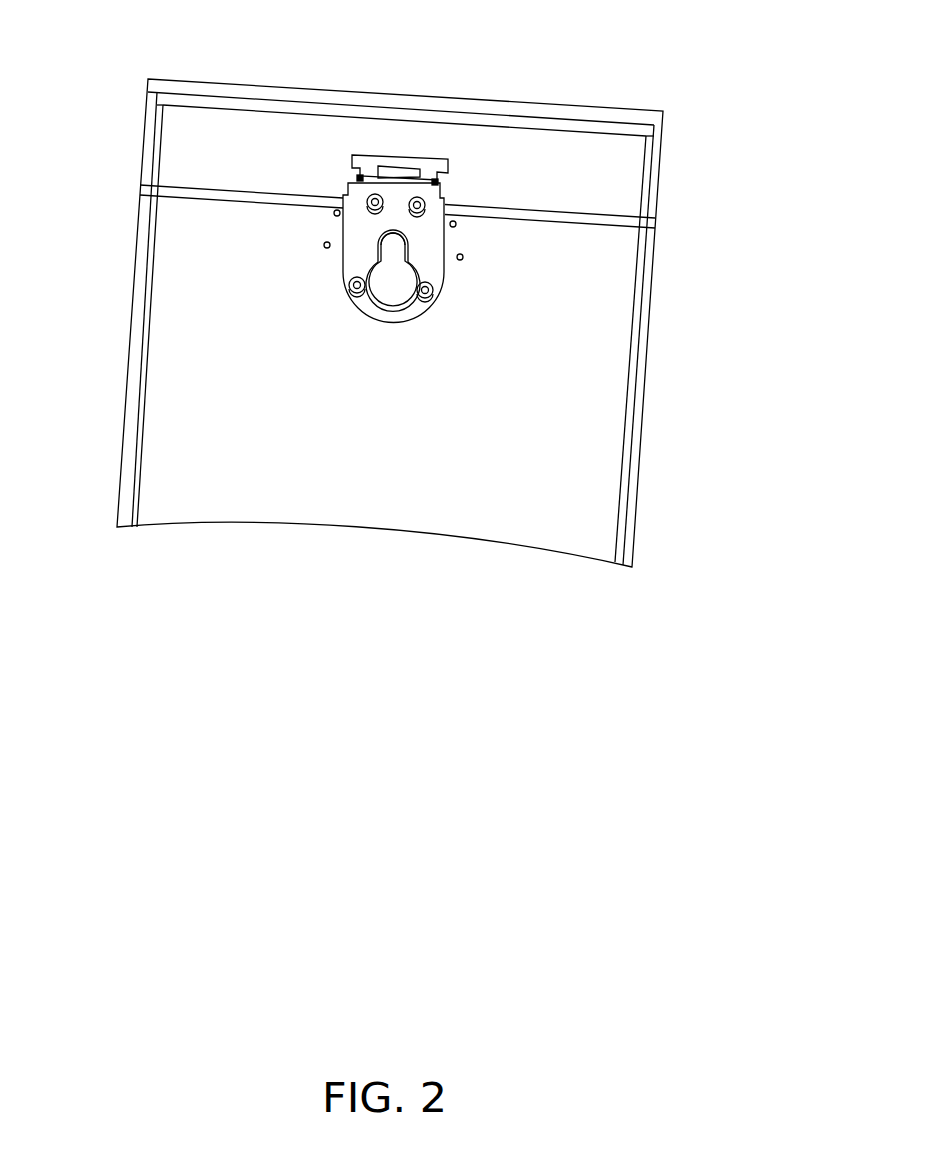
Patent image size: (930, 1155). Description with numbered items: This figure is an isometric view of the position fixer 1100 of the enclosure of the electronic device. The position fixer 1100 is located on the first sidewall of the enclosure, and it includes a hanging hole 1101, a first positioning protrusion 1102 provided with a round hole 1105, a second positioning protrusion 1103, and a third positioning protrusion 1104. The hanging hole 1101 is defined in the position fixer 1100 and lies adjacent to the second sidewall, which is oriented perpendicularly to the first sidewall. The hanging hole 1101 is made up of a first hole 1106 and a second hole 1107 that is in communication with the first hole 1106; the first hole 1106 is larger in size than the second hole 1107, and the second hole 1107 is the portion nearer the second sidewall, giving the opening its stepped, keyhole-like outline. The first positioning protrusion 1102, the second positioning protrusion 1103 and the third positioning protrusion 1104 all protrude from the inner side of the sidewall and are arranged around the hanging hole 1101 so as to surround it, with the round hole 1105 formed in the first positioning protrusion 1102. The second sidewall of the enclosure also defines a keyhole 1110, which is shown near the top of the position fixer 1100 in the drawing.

The position fixer 1100 is at (333, 232).
The hanging hole 1101 is at (543, 167).
The first positioning protrusion 1102 is at (376, 194).
The second positioning protrusion 1103 is at (337, 210).
The third positioning protrusion 1104 is at (435, 180).
The round hole 1105 is at (425, 291).
The first hole 1106 is at (397, 284).
The second hole 1107 is at (393, 244).
The keyhole 1110 is at (404, 166).